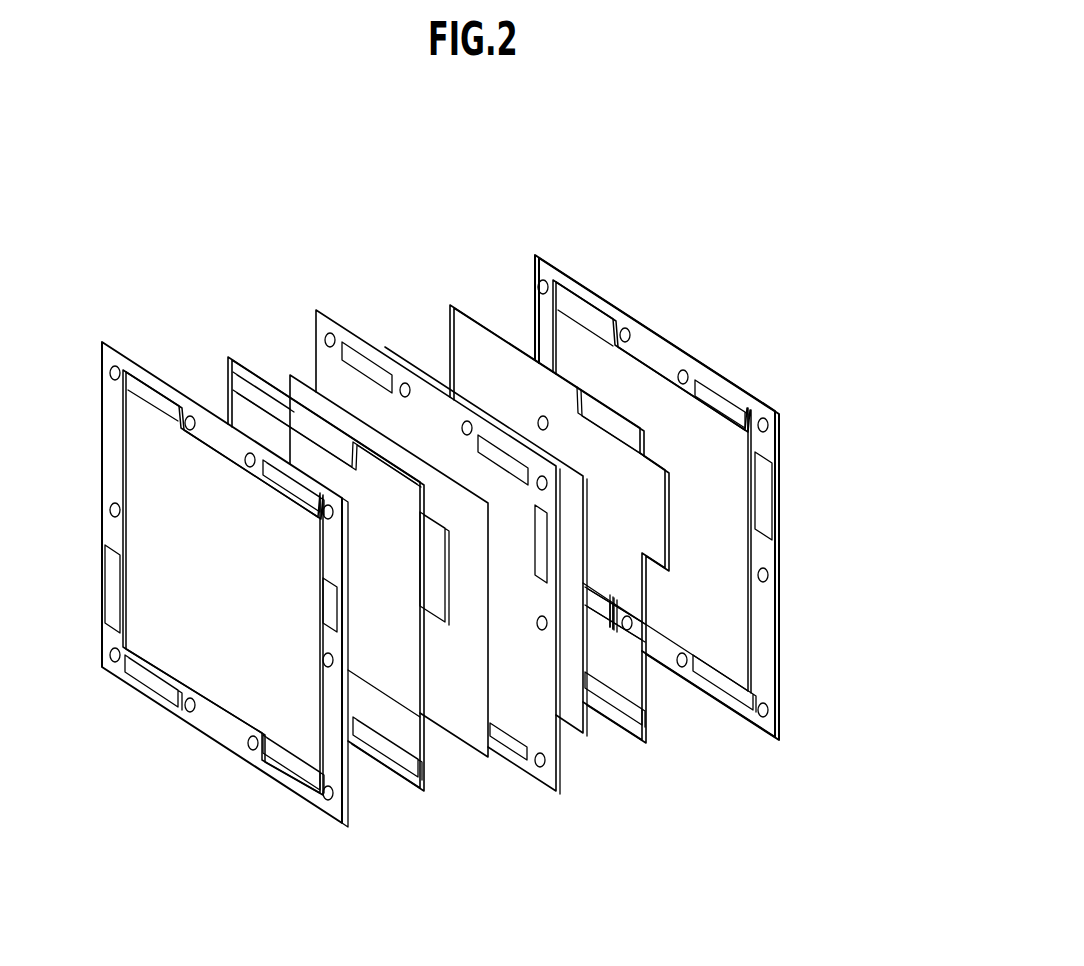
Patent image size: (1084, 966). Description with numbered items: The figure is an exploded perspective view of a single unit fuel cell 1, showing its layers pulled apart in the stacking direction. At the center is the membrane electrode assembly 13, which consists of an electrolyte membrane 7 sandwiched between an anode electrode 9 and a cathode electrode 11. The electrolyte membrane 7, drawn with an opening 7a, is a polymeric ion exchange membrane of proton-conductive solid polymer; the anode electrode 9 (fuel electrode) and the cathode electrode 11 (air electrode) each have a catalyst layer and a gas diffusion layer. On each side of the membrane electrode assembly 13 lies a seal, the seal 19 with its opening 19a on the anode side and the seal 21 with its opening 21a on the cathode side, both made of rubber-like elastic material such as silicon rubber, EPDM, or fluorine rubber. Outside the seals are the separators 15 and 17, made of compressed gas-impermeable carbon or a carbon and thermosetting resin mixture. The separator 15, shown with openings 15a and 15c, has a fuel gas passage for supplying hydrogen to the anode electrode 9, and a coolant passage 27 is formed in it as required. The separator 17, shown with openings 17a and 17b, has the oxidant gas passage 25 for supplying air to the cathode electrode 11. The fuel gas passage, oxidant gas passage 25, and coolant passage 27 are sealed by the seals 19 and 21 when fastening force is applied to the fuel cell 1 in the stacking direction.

The unit fuel cell 1 is at (620, 262).
The electrolyte membrane 7 is at (454, 569).
The membrane opening 7a is at (497, 452).
The anode electrode 9 is at (487, 745).
The cathode electrode 11 is at (583, 735).
The membrane electrode assembly 13 is at (477, 594).
The separator 15 is at (242, 619).
The separator opening 15a is at (302, 497).
The separator slot 15c is at (333, 593).
The separator 17 is at (711, 533).
The separator opening 17a is at (725, 400).
The separator slot 17b is at (765, 520).
The seal 19 is at (351, 577).
The gasket opening 19a is at (377, 467).
The seal 21 is at (650, 558).
The gasket opening 21a is at (628, 437).
The oxidant gas passage 25 is at (733, 628).
The coolant passage 27 is at (230, 697).